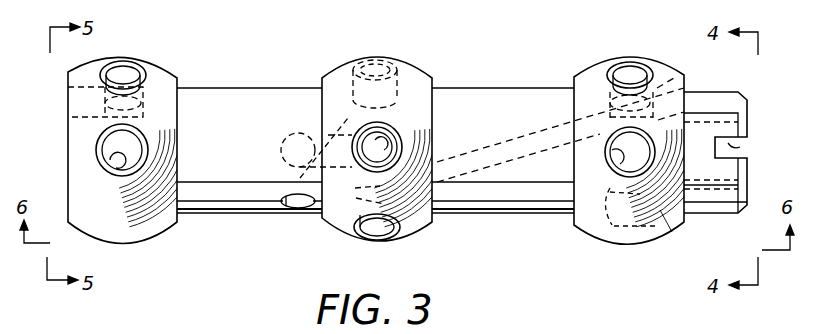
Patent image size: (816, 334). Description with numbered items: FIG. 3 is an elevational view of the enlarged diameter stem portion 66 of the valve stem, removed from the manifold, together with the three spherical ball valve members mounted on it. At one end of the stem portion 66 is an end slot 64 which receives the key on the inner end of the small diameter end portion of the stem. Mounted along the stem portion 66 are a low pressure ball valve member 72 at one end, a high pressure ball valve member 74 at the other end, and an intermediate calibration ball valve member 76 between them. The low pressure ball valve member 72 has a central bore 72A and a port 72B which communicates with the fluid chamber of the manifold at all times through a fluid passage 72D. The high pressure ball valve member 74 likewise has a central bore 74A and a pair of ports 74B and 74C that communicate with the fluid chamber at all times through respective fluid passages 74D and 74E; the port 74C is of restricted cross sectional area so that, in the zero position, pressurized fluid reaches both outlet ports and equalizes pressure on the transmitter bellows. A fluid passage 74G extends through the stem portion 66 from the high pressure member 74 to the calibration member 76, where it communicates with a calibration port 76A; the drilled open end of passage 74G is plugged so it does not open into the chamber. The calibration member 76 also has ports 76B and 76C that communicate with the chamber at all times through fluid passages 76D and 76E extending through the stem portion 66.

The enlarged diameter stem portion 66 is at (235, 142).
The low pressure ball valve member 72 is at (168, 82).
The central bore 72A is at (108, 170).
The port 72B is at (125, 70).
The fluid passage 72D is at (62, 92).
The intermediate calibration ball valve member 76 is at (422, 82).
The calibration port 76A is at (382, 238).
The port 76B is at (388, 144).
The port 76C is at (392, 62).
The fluid passage 76D is at (302, 132).
The fluid passage 76E is at (293, 212).
The high pressure ball valve member 74 is at (660, 68).
The central bore 74A is at (613, 157).
The port 74B is at (625, 70).
The port 74C is at (608, 242).
The fluid passage 74D is at (688, 80).
The fluid passage 74E is at (668, 250).
The fluid passage 74G is at (525, 135).
The end slot 64 is at (740, 147).